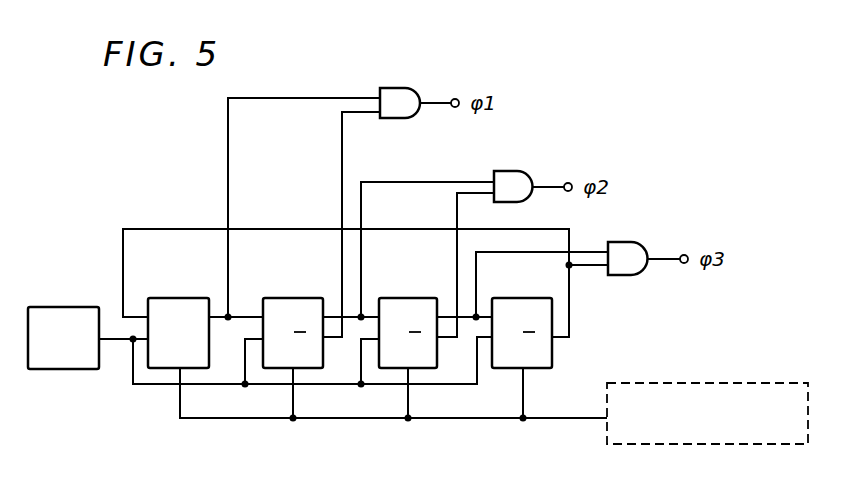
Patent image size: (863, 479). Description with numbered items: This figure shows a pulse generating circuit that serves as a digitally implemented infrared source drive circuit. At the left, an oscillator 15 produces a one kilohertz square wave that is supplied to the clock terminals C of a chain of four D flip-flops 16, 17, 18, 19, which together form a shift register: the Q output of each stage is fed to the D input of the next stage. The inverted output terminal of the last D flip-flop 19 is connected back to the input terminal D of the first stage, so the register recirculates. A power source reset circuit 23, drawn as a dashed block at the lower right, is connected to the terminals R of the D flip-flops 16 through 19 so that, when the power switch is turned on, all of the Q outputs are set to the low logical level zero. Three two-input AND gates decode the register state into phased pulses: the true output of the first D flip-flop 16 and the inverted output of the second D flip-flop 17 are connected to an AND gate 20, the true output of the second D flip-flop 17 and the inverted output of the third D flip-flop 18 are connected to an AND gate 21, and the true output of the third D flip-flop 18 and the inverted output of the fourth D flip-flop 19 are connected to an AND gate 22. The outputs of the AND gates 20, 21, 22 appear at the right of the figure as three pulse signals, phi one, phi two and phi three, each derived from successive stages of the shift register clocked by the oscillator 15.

The oscillator 15 is at (70, 307).
The D flip-flop 16 is at (176, 298).
The D flip-flop 17 is at (290, 298).
The D flip-flop 18 is at (406, 298).
The D flip-flop 19 is at (520, 298).
The AND gate 20 is at (409, 88).
The AND gate 21 is at (518, 171).
The AND gate 22 is at (628, 242).
The power source reset circuit 23 is at (685, 383).